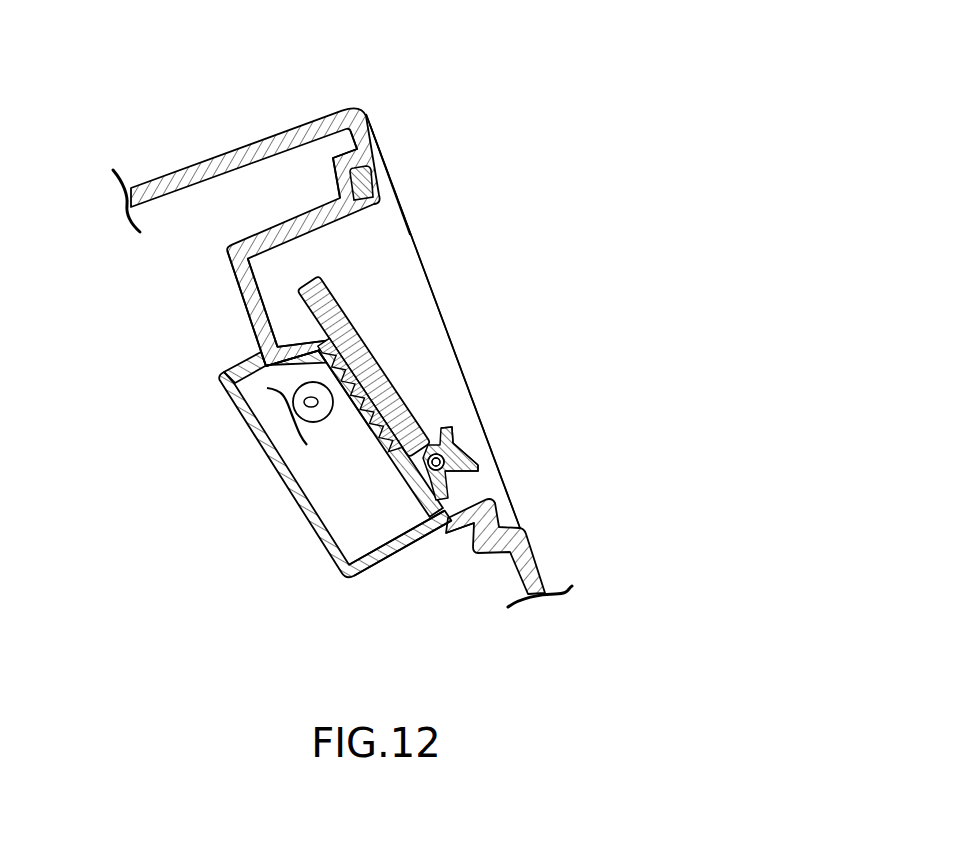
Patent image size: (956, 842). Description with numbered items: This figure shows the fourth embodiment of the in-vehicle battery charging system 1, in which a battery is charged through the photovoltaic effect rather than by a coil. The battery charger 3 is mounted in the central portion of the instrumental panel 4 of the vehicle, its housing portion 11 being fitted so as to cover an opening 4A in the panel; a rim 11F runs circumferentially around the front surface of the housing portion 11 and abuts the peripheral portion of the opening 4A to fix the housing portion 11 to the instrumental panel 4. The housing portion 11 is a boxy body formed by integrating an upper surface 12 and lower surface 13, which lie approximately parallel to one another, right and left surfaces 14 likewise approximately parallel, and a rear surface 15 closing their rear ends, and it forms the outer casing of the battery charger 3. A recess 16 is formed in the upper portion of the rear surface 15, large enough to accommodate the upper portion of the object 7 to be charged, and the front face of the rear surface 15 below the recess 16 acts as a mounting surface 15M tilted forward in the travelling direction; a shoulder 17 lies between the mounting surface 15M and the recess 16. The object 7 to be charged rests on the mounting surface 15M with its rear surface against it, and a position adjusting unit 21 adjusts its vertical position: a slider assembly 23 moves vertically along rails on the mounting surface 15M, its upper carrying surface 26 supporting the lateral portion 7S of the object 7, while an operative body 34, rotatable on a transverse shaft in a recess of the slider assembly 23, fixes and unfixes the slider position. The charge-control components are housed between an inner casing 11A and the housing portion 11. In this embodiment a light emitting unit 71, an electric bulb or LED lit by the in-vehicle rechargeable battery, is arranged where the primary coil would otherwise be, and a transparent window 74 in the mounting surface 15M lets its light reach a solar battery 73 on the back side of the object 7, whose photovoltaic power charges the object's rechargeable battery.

The in-vehicle battery charging system 1 is at (395, 95).
The battery charger 3 is at (335, 485).
The instrumental panel 4 is at (547, 578).
The opening 4A is at (338, 157).
The object to be charged 7 is at (335, 294).
The lateral portion 7S is at (436, 462).
The carrying surface 26 is at (436, 462).
The housing portion 11 is at (413, 312).
The inner casing 11A is at (347, 557).
The rim 11F is at (387, 173).
The upper surface 12 is at (293, 226).
The lower surface 13 is at (447, 529).
The right and left surfaces 14 is at (385, 228).
The rear surface 15 is at (230, 272).
The mounting surface 15M is at (360, 412).
The recess 16 is at (250, 303).
The shoulder 17 is at (300, 338).
The position adjusting unit 21 is at (470, 448).
The slider assembly 23 is at (442, 428).
The operative body 34 is at (470, 463).
The light emitting unit 71 is at (285, 408).
The solar battery 73 is at (358, 380).
The transparent window 74 is at (353, 421).